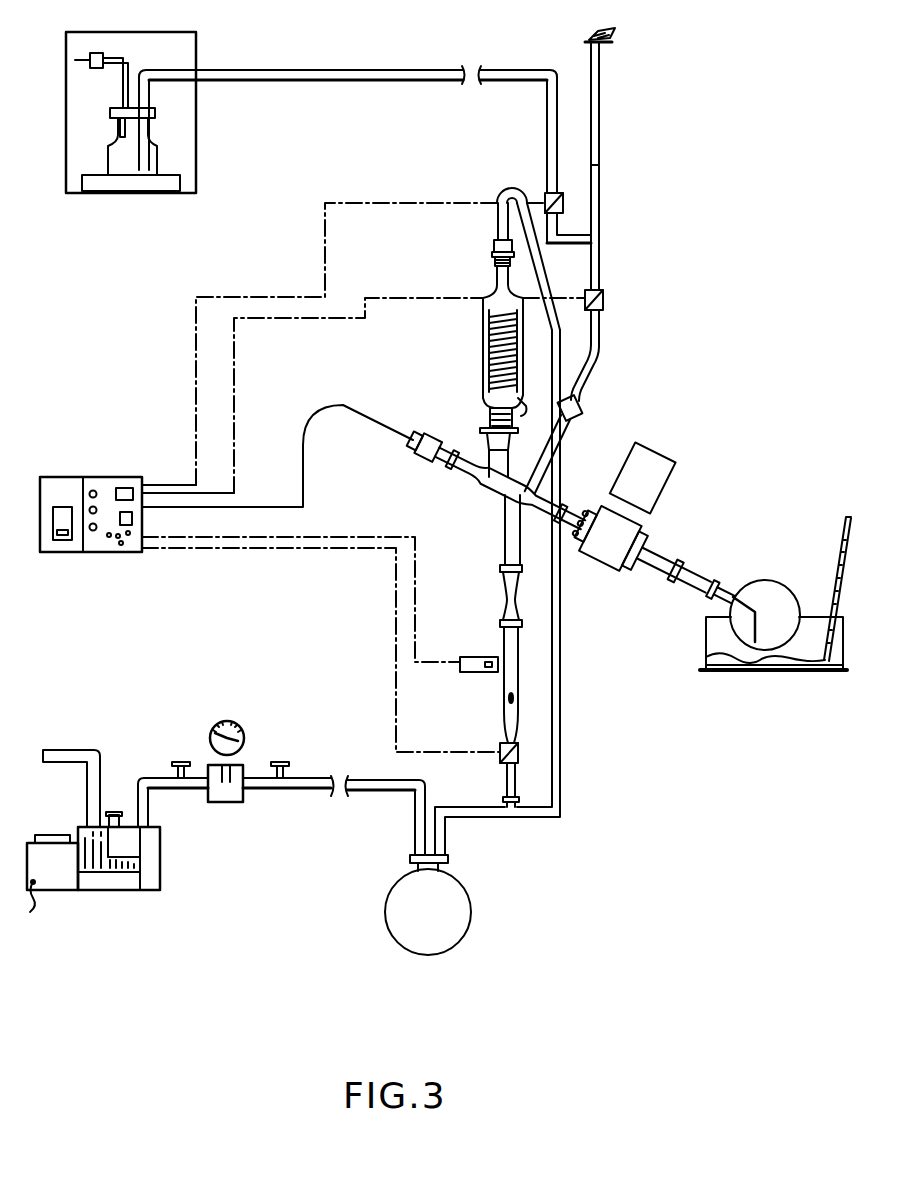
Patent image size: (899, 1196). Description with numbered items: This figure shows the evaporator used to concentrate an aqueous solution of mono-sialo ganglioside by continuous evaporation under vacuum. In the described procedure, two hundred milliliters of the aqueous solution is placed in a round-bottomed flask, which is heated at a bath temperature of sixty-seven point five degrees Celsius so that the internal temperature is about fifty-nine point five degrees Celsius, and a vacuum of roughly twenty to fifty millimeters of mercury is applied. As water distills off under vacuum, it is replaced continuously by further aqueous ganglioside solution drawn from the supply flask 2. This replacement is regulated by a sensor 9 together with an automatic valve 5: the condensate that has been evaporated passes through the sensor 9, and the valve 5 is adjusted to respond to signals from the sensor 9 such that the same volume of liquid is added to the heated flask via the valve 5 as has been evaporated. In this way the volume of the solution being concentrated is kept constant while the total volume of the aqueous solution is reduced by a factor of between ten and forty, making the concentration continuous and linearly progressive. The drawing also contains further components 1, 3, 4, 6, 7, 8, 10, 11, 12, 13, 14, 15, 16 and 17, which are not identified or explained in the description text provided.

The thermostat enclosure 1 is at (197, 124).
The flask 2 is at (157, 147).
The inlet valve 3 is at (97, 68).
The supply pipe 4 is at (548, 108).
The automatic valve 5 is at (545, 196).
The gas inlet pipe 6 is at (606, 44).
The heating bath 7 is at (765, 682).
The vacuum line 8 is at (559, 626).
The sensor 9 is at (478, 657).
The flow tube 10 is at (505, 703).
The reaction vessel 11 is at (488, 489).
The control unit 12 is at (113, 552).
The vacuum pump 13 is at (110, 893).
The pressure gauge 14 is at (245, 741).
The thermometer 15 is at (834, 556).
The trap flask 16 is at (415, 917).
The display 17 is at (62, 542).